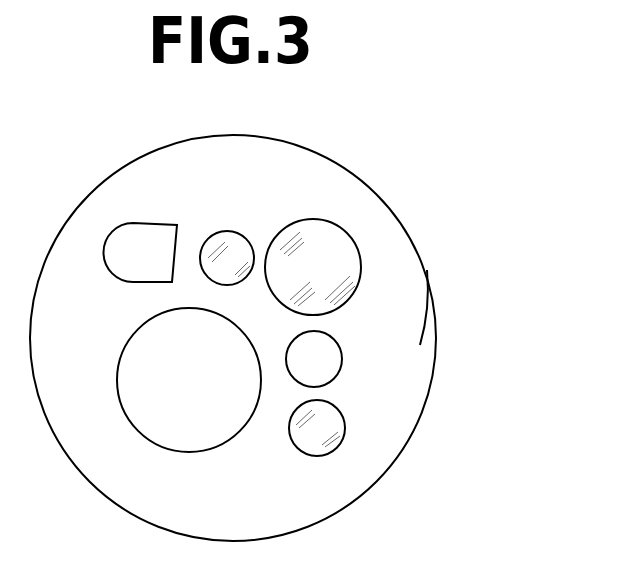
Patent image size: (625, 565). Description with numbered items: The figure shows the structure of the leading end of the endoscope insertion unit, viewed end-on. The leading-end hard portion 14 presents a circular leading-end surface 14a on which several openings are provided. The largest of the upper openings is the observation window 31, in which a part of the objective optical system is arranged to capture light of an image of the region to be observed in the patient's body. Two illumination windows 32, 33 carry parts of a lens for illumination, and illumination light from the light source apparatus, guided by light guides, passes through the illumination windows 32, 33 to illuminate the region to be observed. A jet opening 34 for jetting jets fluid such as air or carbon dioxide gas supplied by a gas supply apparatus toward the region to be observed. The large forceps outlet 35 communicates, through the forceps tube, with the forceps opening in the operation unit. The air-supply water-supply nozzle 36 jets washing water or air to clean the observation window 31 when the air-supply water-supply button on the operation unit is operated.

The leading-end hard portion 14 is at (394, 210).
The leading-end surface 14a is at (418, 308).
The observation window 31 is at (299, 219).
The illumination window 32 is at (345, 428).
The illumination window 33 is at (221, 231).
The jet opening for jetting 34 is at (342, 359).
The forceps outlet 35 is at (117, 380).
The air-supply water-supply nozzle 36 is at (150, 223).